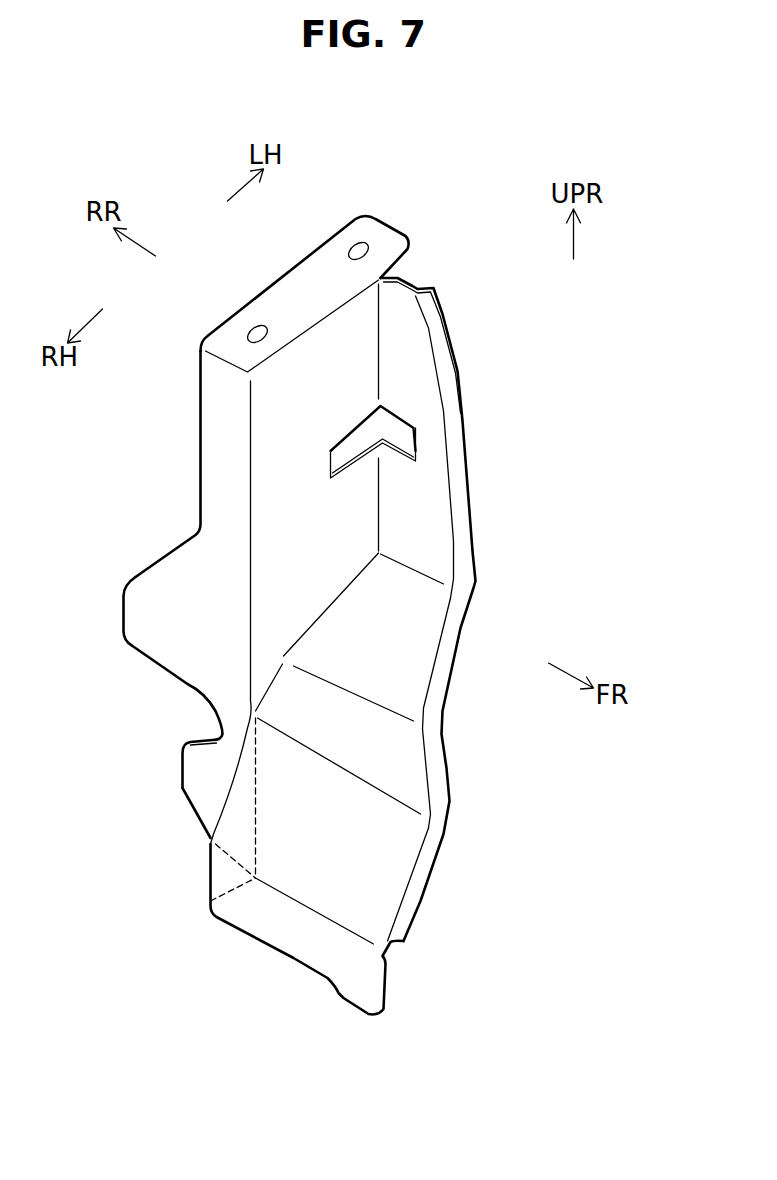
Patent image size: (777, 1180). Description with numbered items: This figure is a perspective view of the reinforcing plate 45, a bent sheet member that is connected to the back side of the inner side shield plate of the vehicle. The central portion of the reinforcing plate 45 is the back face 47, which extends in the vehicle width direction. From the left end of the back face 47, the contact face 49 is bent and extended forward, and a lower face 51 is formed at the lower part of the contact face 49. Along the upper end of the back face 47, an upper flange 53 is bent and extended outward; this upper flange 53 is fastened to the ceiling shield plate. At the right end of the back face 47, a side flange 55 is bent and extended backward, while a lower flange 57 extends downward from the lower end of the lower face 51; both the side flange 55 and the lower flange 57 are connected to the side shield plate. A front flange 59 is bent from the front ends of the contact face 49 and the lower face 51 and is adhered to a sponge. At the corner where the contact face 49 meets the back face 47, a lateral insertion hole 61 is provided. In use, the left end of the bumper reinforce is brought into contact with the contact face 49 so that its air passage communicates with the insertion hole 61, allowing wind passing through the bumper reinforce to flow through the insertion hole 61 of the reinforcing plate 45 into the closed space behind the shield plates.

The reinforcing plate 45 is at (449, 259).
The back face 47 is at (267, 430).
The contact face 49 is at (428, 383).
The lower face 51 is at (393, 743).
The upper flange 53 is at (288, 290).
The side flange 55 is at (135, 613).
The lower flange 57 is at (293, 930).
The front flange 59 is at (458, 555).
The lateral insertion hole 61 is at (387, 443).